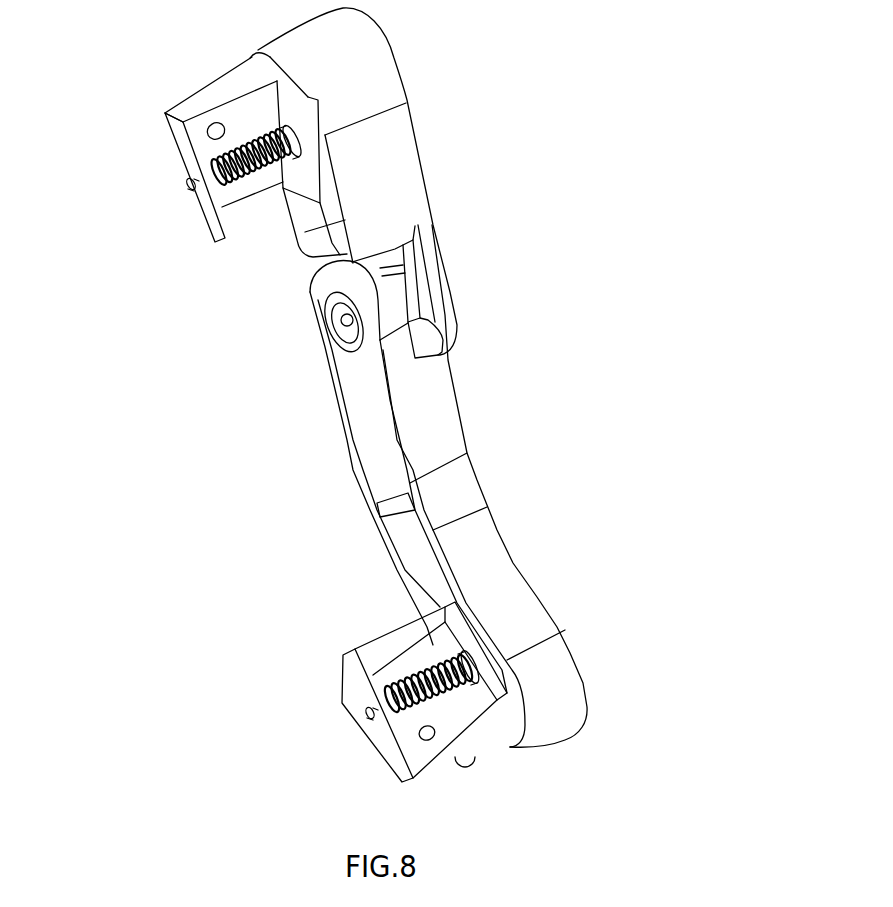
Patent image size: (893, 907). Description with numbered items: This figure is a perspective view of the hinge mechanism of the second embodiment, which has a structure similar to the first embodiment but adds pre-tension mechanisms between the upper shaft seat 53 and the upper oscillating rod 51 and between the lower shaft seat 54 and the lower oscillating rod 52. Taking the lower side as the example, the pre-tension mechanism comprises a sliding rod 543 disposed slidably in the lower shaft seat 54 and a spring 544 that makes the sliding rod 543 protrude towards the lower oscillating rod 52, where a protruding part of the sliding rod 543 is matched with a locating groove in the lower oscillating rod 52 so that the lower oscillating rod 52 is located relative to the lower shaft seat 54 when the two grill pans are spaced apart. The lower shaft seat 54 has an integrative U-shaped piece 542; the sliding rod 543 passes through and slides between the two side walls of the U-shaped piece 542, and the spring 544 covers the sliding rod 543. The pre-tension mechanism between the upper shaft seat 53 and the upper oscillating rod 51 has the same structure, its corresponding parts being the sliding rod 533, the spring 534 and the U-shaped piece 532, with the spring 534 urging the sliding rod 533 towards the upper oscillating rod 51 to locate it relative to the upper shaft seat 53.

The upper oscillating rod 51 is at (402, 183).
The lower oscillating rod 52 is at (490, 537).
The upper shaft seat 53 is at (234, 68).
The U-shaped piece 532 is at (173, 148).
The sliding rod 533 is at (187, 193).
The spring 534 is at (245, 182).
The lower shaft seat 54 is at (482, 757).
The U-shaped piece 542 is at (350, 685).
The sliding rod 543 is at (372, 713).
The spring 544 is at (423, 673).